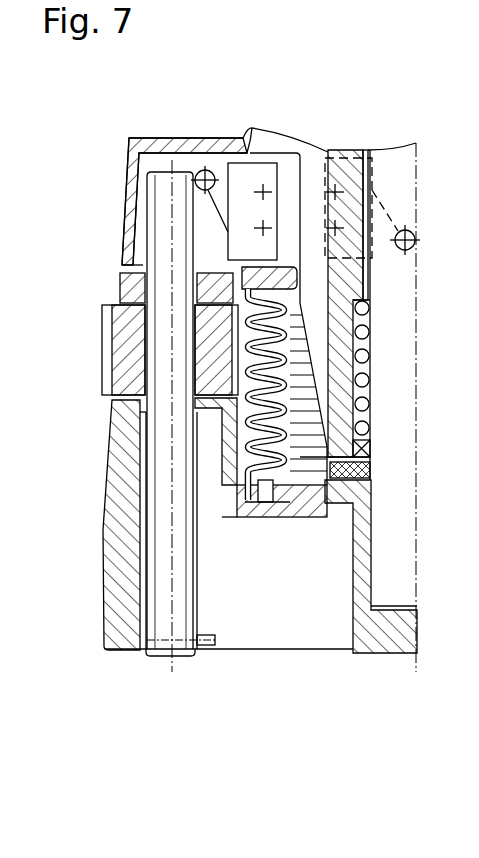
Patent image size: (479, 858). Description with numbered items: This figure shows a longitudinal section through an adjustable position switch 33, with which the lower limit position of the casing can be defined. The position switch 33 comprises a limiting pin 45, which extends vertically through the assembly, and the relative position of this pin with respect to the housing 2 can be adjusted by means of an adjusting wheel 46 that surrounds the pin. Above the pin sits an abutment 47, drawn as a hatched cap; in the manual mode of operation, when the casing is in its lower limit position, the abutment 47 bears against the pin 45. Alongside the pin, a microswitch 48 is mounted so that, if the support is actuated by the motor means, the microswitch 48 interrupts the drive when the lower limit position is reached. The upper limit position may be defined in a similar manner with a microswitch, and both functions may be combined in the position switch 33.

The housing 2 is at (348, 500).
The adjustable position switch 33 is at (112, 213).
The limiting pin 45 is at (162, 462).
The adjusting wheel 46 is at (133, 335).
The abutment 47 is at (213, 147).
The microswitch 48 is at (256, 182).